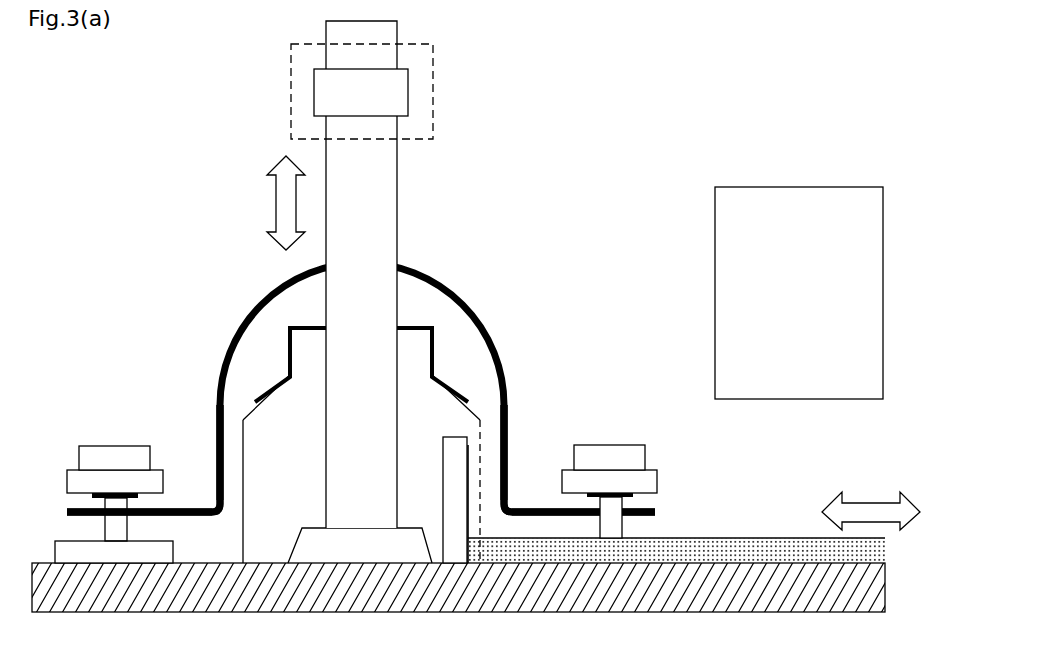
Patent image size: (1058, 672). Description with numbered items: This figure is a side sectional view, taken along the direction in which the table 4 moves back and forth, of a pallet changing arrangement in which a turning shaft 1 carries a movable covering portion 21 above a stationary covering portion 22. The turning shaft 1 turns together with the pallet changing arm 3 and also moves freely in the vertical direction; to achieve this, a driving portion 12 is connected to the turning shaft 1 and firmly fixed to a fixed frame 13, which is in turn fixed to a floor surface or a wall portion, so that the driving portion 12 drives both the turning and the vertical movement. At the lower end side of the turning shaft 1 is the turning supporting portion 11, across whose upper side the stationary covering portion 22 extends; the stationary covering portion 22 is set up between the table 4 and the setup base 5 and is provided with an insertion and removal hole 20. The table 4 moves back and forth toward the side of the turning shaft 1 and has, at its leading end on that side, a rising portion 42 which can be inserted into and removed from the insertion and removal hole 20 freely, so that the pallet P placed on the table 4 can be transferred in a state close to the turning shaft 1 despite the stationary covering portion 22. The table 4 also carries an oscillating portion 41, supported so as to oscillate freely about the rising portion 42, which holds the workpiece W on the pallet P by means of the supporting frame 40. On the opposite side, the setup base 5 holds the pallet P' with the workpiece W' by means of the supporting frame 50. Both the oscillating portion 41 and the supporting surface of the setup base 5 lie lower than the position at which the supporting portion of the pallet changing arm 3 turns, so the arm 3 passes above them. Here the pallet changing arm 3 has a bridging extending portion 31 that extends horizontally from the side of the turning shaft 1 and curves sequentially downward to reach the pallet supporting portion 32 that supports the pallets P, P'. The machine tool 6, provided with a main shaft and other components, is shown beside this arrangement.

The turning shaft 1 is at (372, 186).
The pallet changing arm 3 is at (182, 312).
The table 4 is at (707, 526).
The setup base 5 is at (96, 552).
The machine tool 6 is at (745, 203).
The turning supporting portion 11 is at (330, 552).
The driving portion 12 is at (400, 88).
The fixed frame 13 is at (291, 105).
The insertion and removal hole 20 is at (483, 450).
The movable covering portion 21 is at (300, 327).
The stationary covering portion 22 is at (247, 487).
The bridging extending portion 31 is at (217, 403).
The pallet supporting portion 32 is at (213, 508).
The supporting frame for pallet arranged at oscillating portion 40 is at (612, 523).
The oscillating portion of table 41 is at (527, 540).
The rising portion of table 42 is at (450, 452).
The supporting frame for pallet arranged on setup base 50 is at (115, 527).
The workpiece W is at (609, 408).
The workpiece W' is at (99, 409).
The pallet P is at (613, 416).
The pallet P' is at (118, 434).